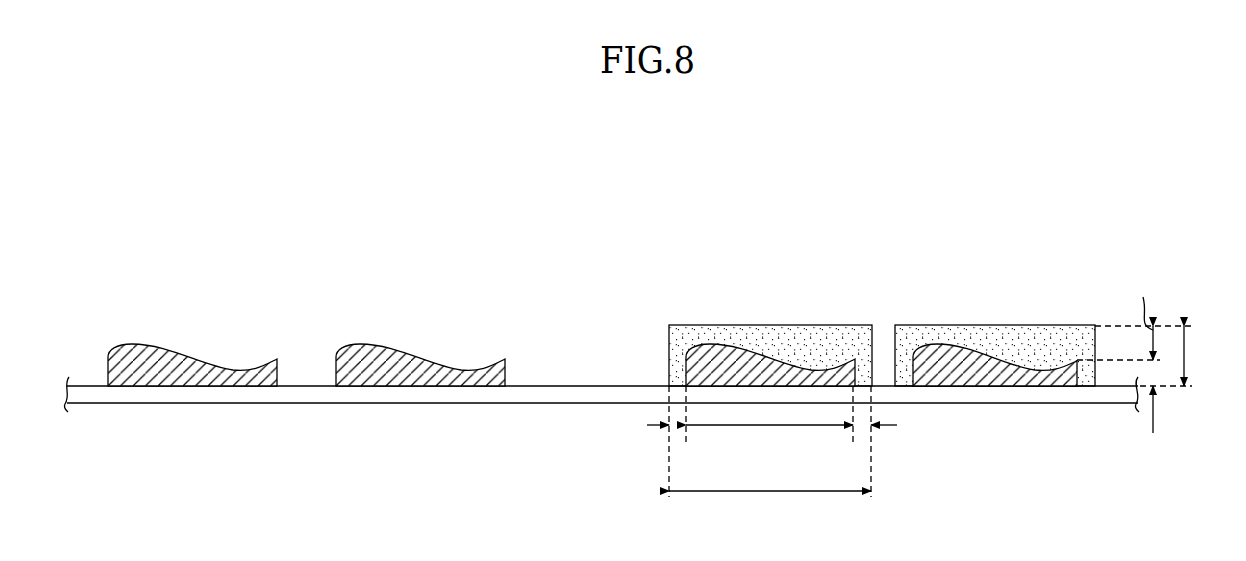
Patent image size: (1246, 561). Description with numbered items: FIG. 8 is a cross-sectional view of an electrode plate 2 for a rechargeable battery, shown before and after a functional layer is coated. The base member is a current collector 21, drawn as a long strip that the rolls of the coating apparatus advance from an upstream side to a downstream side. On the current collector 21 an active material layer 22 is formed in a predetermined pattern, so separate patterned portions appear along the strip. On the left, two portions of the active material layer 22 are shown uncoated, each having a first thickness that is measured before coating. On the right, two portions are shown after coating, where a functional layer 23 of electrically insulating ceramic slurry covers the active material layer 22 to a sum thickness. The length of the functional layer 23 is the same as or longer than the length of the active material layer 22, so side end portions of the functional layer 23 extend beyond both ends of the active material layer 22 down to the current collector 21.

The electrode plate 2 is at (879, 224).
The current collector 21 is at (563, 395).
The active material layer 22 is at (721, 352).
The functional layer 23 is at (806, 341).